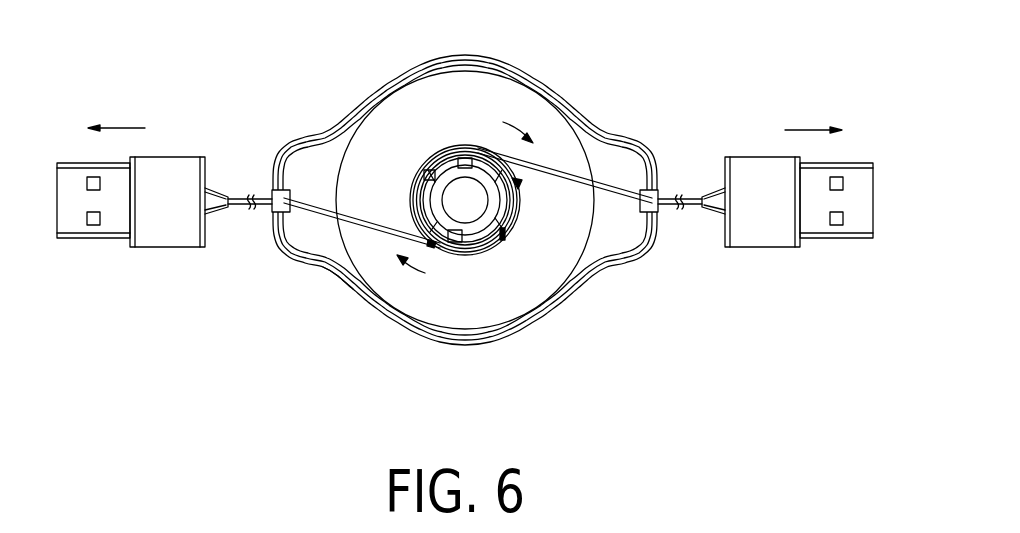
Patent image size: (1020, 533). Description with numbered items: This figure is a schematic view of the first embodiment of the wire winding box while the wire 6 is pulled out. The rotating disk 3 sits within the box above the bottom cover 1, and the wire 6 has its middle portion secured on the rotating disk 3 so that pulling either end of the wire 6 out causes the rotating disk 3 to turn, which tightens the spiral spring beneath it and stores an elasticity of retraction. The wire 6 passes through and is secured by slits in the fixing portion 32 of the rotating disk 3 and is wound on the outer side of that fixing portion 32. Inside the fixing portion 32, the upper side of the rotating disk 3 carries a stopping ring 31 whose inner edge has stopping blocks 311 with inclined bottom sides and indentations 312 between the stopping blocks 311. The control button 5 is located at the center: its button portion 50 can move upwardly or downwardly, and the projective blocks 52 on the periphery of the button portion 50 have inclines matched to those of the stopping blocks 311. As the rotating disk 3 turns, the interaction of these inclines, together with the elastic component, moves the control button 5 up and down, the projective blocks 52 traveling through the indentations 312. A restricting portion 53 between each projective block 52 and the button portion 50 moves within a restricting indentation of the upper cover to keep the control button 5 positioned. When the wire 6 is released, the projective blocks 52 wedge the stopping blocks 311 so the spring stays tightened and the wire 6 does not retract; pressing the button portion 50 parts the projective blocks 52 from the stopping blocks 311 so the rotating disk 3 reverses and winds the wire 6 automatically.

The bottom cover 1 is at (562, 313).
The rotating disk 3 is at (560, 267).
The control button 5 is at (490, 255).
The button portion 50 is at (470, 215).
The projective blocks 52 is at (430, 245).
The restricting portion 53 is at (455, 228).
The wire 6 is at (353, 293).
The stopping ring 31 is at (517, 182).
The fixing portion 32 is at (518, 213).
The stopping blocks 311 is at (470, 162).
The indentations 312 is at (423, 175).